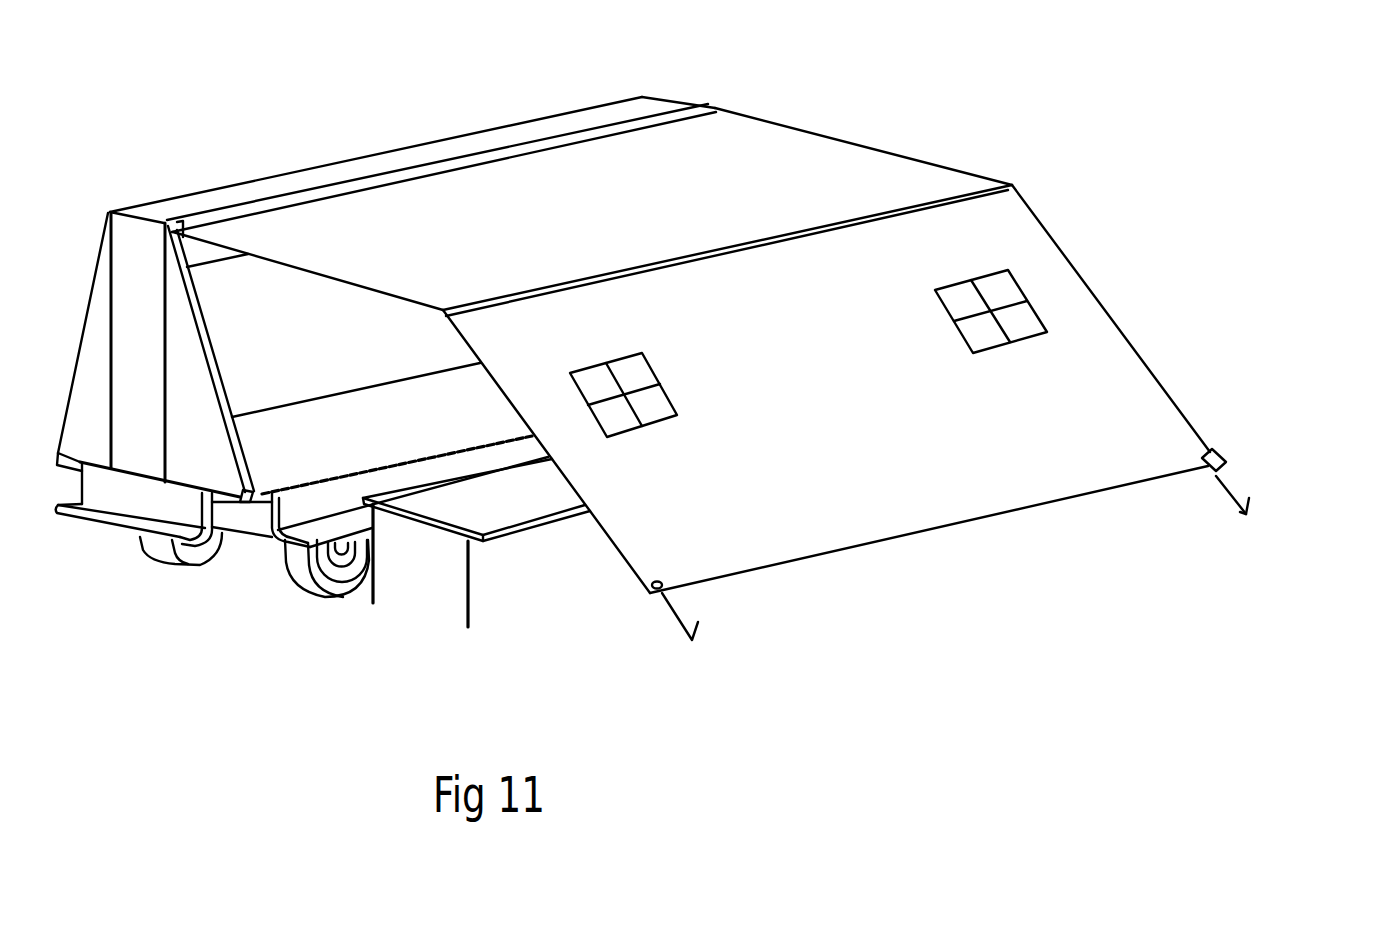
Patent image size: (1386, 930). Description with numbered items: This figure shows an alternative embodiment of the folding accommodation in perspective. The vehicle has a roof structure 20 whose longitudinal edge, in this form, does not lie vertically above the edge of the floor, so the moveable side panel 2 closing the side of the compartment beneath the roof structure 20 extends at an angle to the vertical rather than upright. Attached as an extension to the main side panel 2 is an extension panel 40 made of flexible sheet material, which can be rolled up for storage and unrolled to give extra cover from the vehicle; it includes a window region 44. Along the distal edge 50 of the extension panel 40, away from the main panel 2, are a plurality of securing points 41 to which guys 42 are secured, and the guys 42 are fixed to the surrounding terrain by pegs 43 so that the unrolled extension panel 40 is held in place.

The side panel 2 is at (645, 202).
The roof structure 20 is at (627, 112).
The extension panel of flexible sheet material 40 is at (1182, 405).
The securing point 41 is at (1213, 453).
The guy 42 is at (1227, 493).
The peg 43 is at (1253, 500).
The window region 44 is at (1003, 292).
The distal edge 50 is at (868, 548).